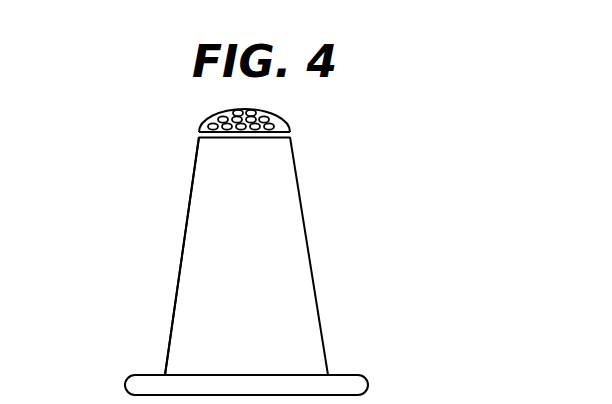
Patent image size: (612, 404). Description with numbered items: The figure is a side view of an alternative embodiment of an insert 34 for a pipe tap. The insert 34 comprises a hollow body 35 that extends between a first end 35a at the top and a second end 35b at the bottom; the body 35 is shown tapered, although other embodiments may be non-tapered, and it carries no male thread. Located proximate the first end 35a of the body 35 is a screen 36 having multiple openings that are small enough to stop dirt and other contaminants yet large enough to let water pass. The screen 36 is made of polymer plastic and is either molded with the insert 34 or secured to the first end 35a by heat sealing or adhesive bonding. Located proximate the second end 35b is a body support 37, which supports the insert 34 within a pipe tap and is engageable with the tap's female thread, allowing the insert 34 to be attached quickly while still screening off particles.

The insert 34 is at (365, 138).
The hollow body 35 is at (268, 238).
The first end 35a is at (197, 148).
The second end 35b is at (195, 360).
The screen 36 is at (277, 116).
The body support 37 is at (358, 380).